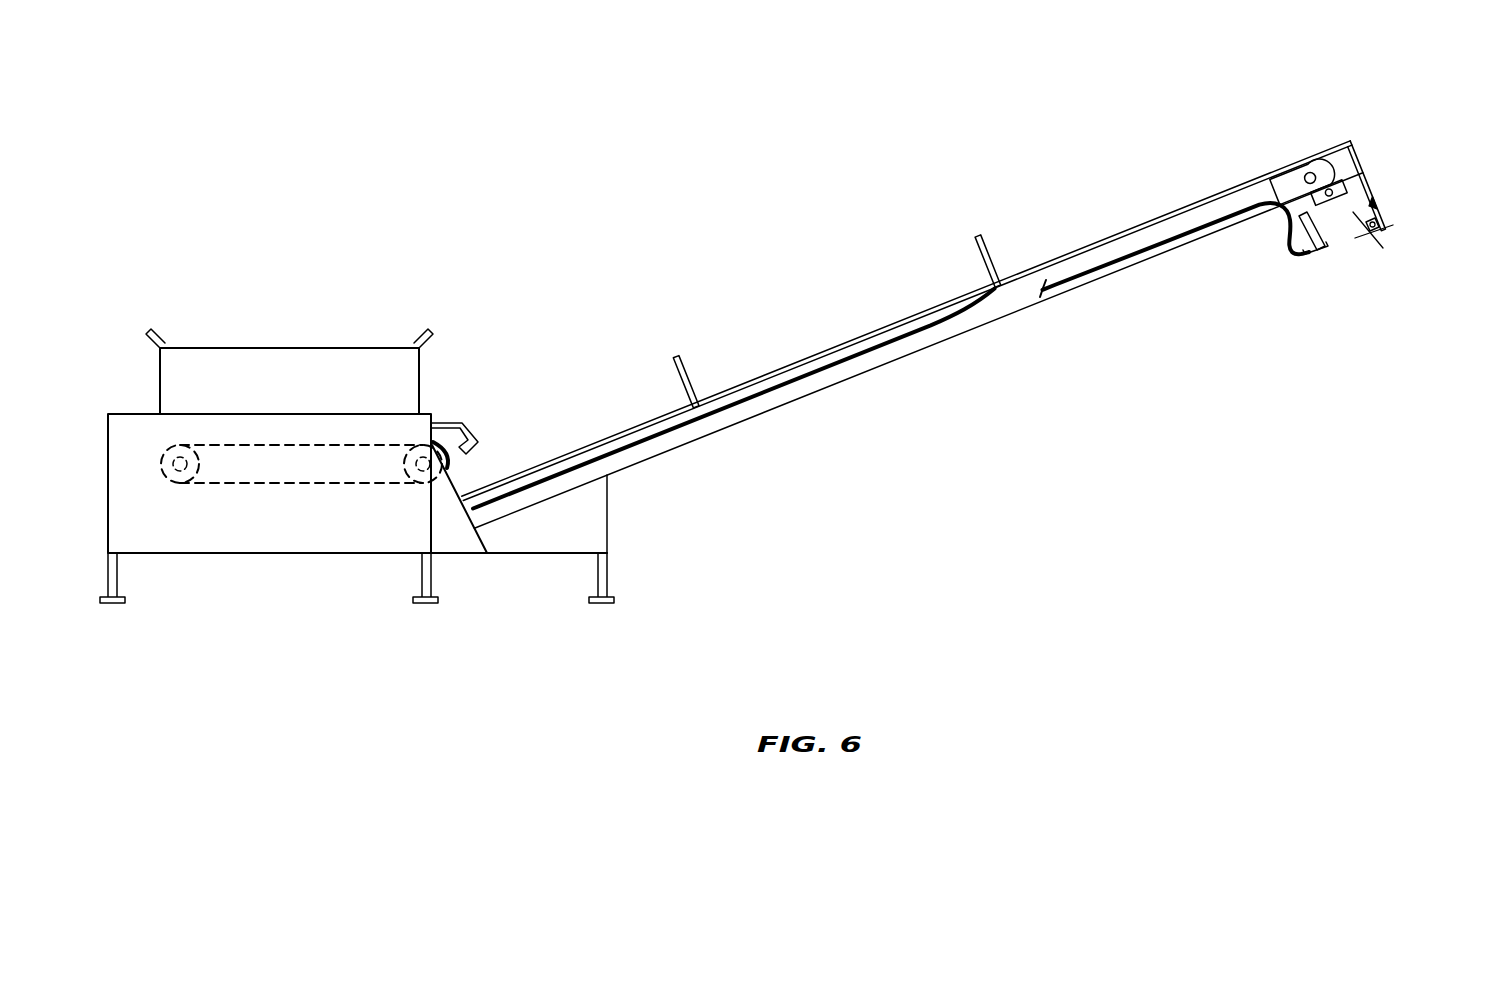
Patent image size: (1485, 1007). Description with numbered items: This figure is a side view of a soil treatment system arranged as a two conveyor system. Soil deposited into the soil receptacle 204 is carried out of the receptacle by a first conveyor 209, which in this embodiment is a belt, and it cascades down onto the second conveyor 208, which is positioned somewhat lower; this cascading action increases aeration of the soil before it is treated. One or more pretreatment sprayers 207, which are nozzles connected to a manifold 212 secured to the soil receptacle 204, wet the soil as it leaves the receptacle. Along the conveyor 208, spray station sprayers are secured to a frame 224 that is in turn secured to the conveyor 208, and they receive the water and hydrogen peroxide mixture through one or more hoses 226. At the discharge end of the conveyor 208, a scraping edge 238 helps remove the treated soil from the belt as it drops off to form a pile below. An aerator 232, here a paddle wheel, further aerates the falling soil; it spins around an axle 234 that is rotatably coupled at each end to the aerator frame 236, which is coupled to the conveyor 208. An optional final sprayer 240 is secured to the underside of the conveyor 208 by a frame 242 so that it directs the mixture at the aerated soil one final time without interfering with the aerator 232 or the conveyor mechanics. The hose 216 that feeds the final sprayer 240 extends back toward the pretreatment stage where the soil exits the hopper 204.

The soil receptacle 204 is at (343, 372).
The pretreatment sprayer 207 is at (477, 432).
The conveyor 208 is at (1022, 294).
The first conveyor 209 is at (307, 485).
The manifold 212 is at (447, 415).
The hose 216 is at (1127, 259).
The frame 224 is at (690, 374).
The hoses 226 is at (655, 441).
The aerator 232 is at (1384, 226).
The axle 234 is at (1381, 234).
The frame 236 is at (1365, 164).
The scraping edge 238 is at (1328, 200).
The final sprayer 240 is at (1307, 257).
The frame 242 is at (1288, 241).